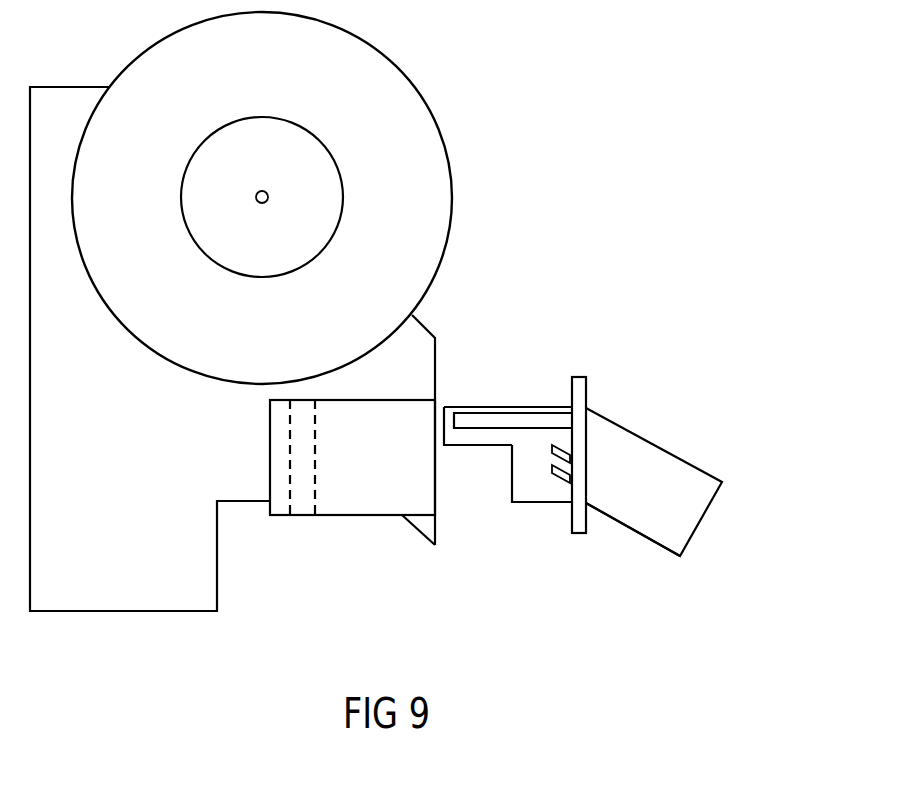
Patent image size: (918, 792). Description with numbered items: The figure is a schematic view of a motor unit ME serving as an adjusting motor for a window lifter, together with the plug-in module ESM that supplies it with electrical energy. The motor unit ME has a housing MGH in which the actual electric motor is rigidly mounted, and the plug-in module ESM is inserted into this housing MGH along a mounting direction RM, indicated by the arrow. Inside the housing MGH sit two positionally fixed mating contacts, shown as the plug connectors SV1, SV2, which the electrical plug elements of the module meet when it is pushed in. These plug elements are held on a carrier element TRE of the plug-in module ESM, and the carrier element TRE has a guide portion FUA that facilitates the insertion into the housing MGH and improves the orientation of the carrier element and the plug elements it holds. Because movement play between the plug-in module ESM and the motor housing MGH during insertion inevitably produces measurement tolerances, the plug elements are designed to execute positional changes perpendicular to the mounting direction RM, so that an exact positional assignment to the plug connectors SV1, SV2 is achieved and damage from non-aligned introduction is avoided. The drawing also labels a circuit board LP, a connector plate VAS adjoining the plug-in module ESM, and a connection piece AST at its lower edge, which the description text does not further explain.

The motor unit ME is at (472, 193).
The motor housing MGH is at (333, 517).
The plug connector SV1 is at (290, 449).
The plug connector SV2 is at (315, 495).
The mounting direction RM is at (496, 490).
The guide portion FUA is at (473, 405).
The carrier element TRE is at (552, 420).
The circuit board LP is at (553, 503).
The connector plate VAS is at (586, 377).
The plug-in module ESM is at (675, 422).
The connection piece AST is at (667, 548).